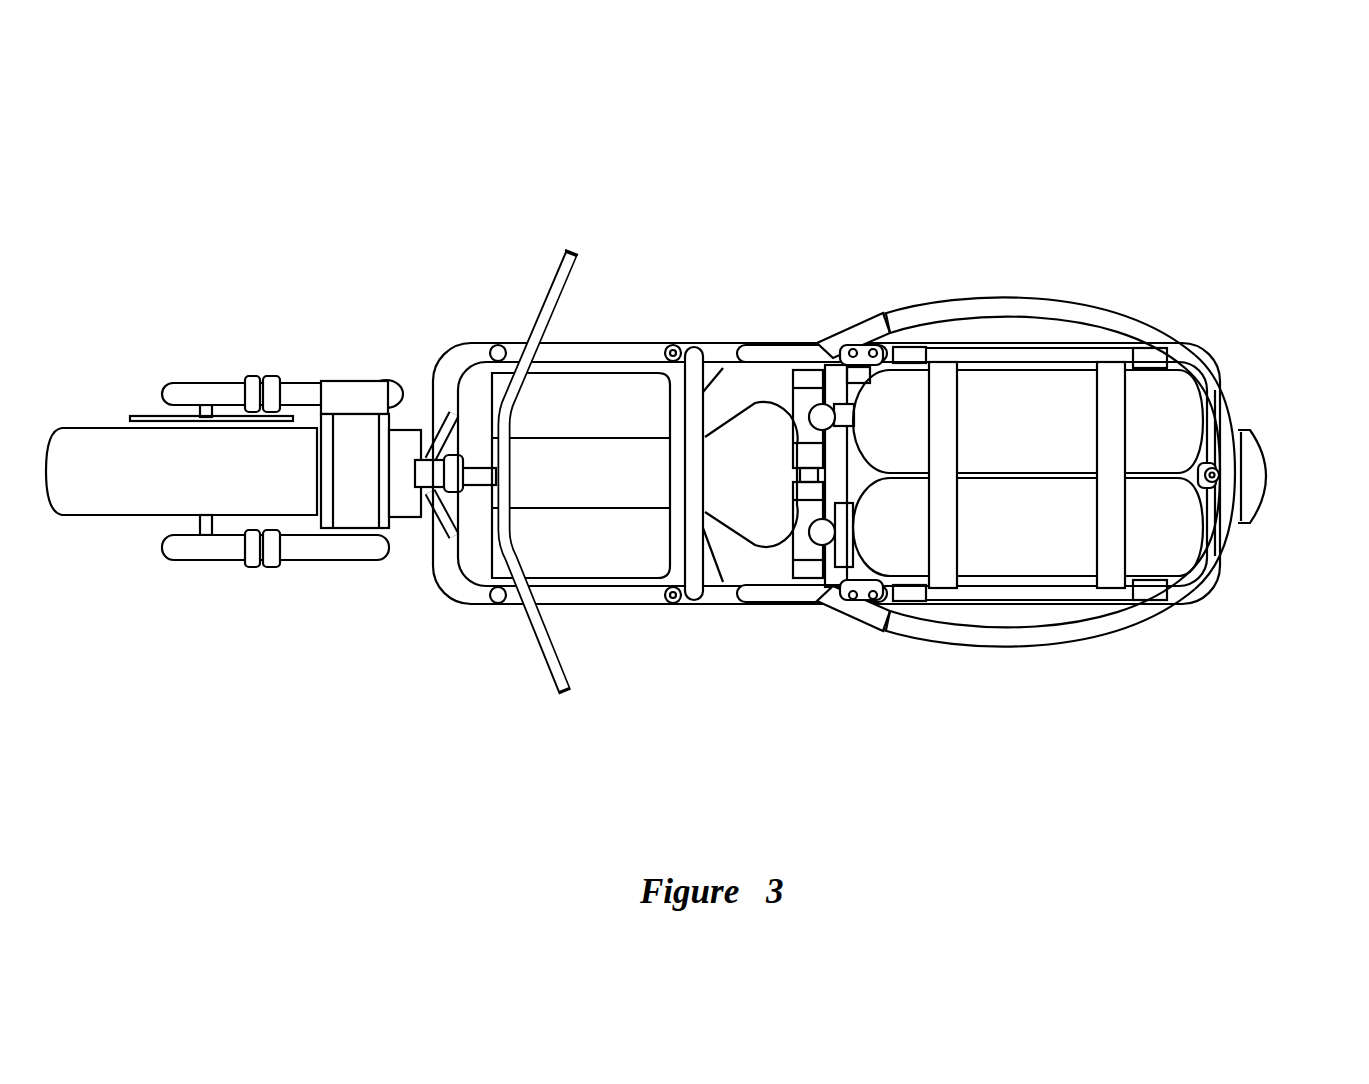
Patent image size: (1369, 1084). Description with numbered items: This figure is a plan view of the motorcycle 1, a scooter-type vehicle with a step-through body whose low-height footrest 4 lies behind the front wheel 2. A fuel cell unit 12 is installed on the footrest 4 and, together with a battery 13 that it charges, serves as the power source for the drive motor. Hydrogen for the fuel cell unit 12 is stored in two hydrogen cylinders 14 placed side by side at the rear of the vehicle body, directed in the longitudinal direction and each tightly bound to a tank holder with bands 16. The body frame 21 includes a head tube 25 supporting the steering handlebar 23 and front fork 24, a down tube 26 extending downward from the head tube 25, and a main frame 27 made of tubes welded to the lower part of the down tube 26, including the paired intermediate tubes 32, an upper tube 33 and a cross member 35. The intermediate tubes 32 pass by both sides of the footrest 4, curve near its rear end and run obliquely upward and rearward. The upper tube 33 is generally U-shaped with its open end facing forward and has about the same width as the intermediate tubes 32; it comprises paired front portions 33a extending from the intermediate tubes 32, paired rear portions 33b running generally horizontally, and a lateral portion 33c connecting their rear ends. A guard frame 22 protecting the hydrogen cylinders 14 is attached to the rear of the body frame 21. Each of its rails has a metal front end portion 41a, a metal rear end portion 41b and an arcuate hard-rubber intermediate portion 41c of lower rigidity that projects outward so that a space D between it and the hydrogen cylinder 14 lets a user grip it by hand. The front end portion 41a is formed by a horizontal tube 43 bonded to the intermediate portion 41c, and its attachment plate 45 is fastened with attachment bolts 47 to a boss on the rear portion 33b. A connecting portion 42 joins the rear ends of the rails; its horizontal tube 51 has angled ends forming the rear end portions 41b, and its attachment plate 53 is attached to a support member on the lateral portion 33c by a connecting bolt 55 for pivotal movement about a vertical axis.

The motorcycle 1 is at (433, 222).
The front wheel 2 is at (98, 516).
The footrest 4 is at (546, 538).
The fuel cell unit 12 is at (592, 556).
The battery 13 is at (737, 417).
The hydrogen cylinder 14 is at (1067, 400).
The bands 16 is at (960, 390).
The body frame 21 is at (430, 367).
The guard frame 22 is at (1114, 419).
The steering handlebar 23 is at (556, 266).
The front fork 24 is at (200, 382).
The head tube 25 is at (430, 474).
The down tube 26 is at (343, 400).
The main frame 27 is at (622, 336).
The intermediate tubes 32 is at (587, 352).
The upper tube 33 is at (786, 343).
The front portions 33a is at (782, 598).
The rear portions 33b is at (1000, 353).
The lateral portion 33c is at (1207, 367).
The cross member 35 is at (683, 473).
The front end portion 41a is at (850, 345).
The rear end portion 41b is at (1215, 362).
The intermediate portion 41c is at (1075, 320).
The connecting portion 42 is at (1238, 540).
The horizontal tube 43 is at (836, 343).
The attachment plate 45 is at (887, 340).
The attachment bolts 47 is at (857, 345).
The horizontal tube 51 is at (1210, 422).
The attachment plate 53 is at (1212, 457).
The connecting bolt 55 is at (1215, 477).
The space D is at (1073, 360).